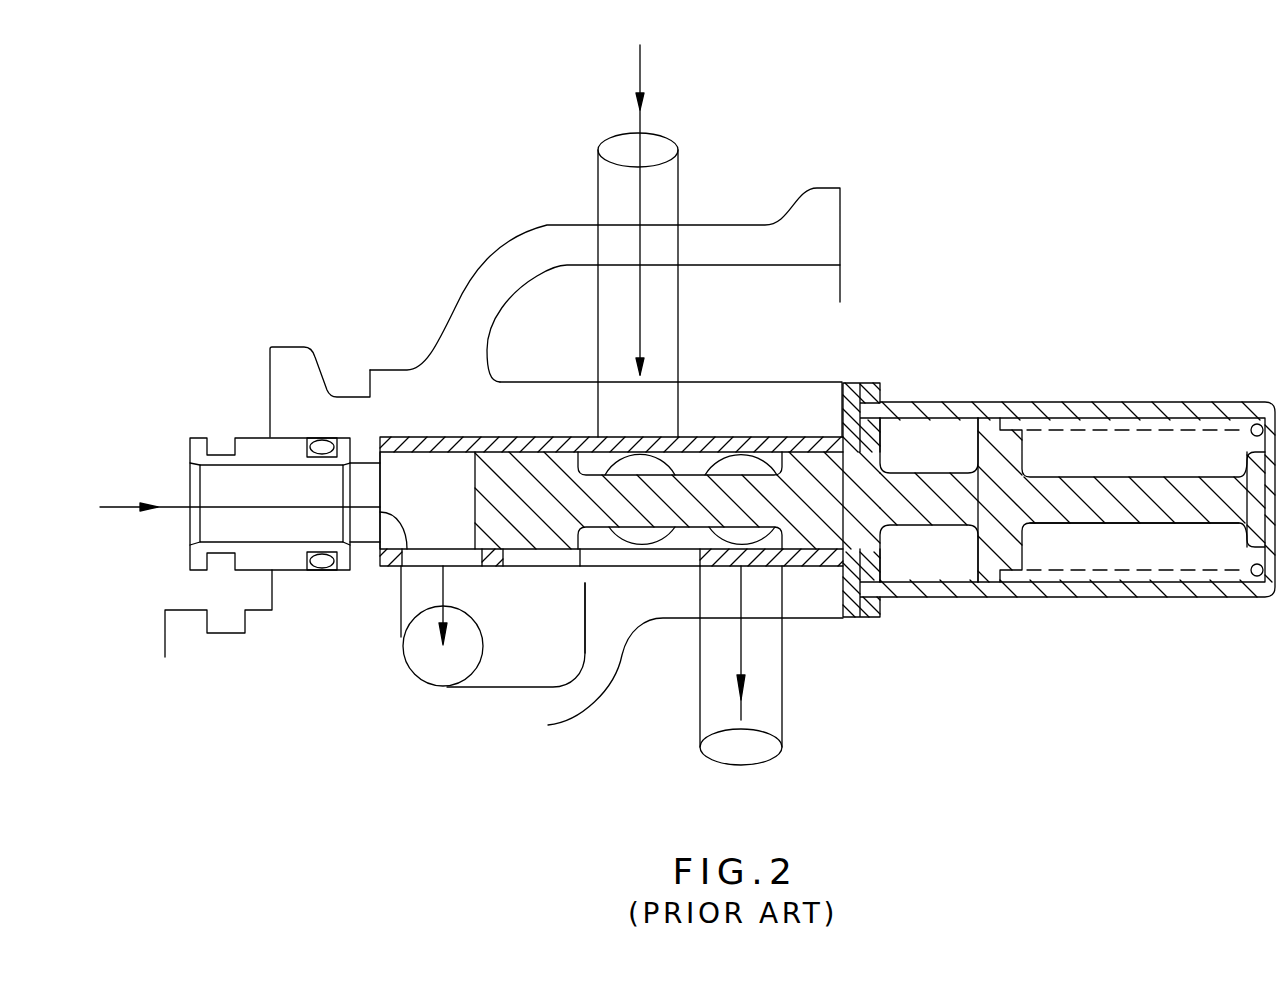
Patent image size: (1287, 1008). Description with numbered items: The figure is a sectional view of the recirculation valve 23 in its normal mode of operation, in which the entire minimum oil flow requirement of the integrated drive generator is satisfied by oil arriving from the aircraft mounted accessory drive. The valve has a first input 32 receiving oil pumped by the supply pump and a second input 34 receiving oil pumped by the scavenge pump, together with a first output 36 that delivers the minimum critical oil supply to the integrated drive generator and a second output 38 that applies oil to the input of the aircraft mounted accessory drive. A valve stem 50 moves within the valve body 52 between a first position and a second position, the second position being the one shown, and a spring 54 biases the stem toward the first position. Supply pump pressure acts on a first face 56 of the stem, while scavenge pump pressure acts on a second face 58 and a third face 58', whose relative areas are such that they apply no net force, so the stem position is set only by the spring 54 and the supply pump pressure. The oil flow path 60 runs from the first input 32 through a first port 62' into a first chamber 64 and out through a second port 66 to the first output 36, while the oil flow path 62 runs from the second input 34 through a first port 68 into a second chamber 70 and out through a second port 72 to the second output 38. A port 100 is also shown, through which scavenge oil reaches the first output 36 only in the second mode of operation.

The recirculation valve 23 is at (485, 205).
The first input 32 is at (190, 488).
The second input 34 is at (660, 146).
The first output 36 is at (403, 670).
The second output 38 is at (770, 713).
The valve stem 50 is at (1150, 477).
The valve body 52 is at (1045, 402).
The spring 54 is at (1100, 568).
The first face 56 is at (380, 473).
The second face 58 is at (649, 396).
The third face 58' is at (734, 615).
The oil flow path 60 is at (105, 510).
The oil flow path 62 is at (696, 207).
The first port 62' is at (316, 484).
The first chamber 64 is at (457, 527).
The second port 66 is at (433, 549).
The first port 68 is at (650, 463).
The second chamber 70 is at (690, 465).
The second port 72 is at (778, 465).
The port 100 is at (541, 566).